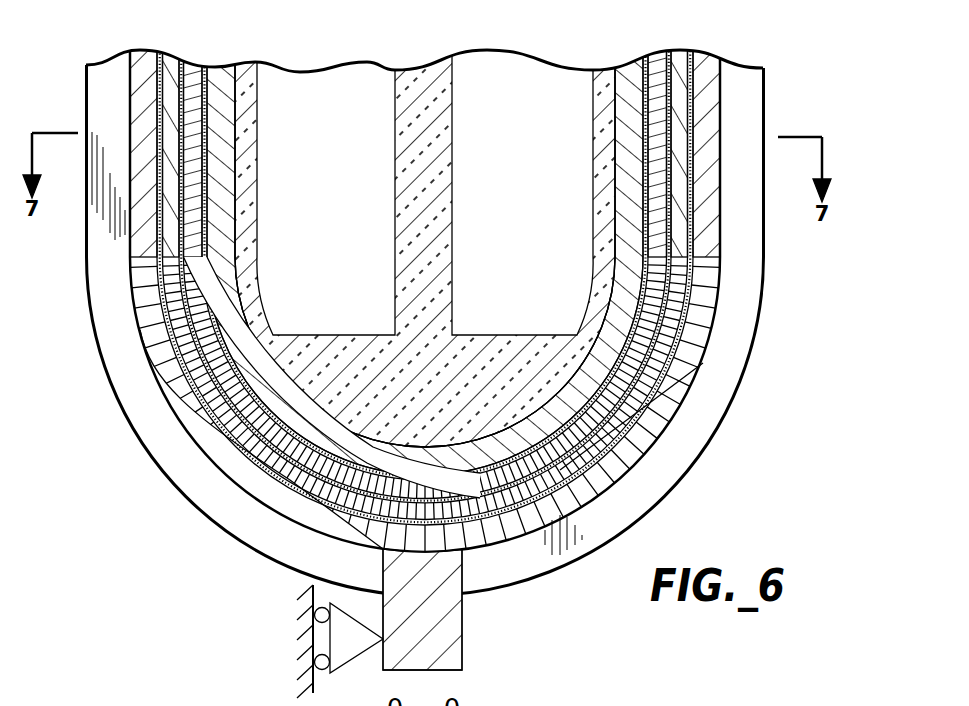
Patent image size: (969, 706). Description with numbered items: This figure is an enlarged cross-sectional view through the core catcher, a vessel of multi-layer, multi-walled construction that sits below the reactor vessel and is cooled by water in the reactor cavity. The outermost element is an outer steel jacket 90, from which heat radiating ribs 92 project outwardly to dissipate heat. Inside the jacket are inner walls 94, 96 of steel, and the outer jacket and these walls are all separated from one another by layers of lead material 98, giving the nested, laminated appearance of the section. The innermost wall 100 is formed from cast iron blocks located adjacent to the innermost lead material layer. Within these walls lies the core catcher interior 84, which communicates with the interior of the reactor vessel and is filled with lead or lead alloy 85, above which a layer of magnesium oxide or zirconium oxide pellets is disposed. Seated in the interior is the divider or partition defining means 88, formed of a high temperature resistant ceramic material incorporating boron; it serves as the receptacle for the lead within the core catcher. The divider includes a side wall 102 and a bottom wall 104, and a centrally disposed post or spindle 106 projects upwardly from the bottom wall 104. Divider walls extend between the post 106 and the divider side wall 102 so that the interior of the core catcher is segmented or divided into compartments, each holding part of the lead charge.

The core catcher interior 84 is at (300, 68).
The lead or lead alloy 85 is at (487, 50).
The divider or partition defining means 88 is at (448, 115).
The outer steel jacket 90 is at (132, 287).
The heat radiating ribs 92 is at (693, 467).
The inner wall 94 is at (147, 350).
The inner wall 96 is at (580, 405).
The layers of lead material 98 is at (204, 62).
The inner wall 100 is at (210, 447).
The side wall 102 is at (600, 70).
The bottom wall 104 is at (300, 333).
The post or spindle 106 is at (397, 182).